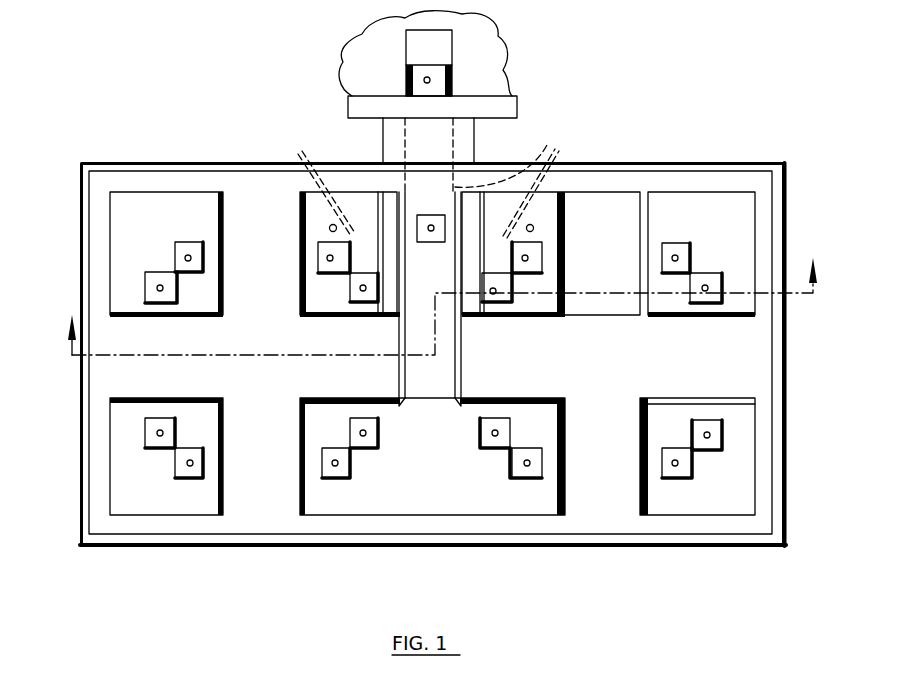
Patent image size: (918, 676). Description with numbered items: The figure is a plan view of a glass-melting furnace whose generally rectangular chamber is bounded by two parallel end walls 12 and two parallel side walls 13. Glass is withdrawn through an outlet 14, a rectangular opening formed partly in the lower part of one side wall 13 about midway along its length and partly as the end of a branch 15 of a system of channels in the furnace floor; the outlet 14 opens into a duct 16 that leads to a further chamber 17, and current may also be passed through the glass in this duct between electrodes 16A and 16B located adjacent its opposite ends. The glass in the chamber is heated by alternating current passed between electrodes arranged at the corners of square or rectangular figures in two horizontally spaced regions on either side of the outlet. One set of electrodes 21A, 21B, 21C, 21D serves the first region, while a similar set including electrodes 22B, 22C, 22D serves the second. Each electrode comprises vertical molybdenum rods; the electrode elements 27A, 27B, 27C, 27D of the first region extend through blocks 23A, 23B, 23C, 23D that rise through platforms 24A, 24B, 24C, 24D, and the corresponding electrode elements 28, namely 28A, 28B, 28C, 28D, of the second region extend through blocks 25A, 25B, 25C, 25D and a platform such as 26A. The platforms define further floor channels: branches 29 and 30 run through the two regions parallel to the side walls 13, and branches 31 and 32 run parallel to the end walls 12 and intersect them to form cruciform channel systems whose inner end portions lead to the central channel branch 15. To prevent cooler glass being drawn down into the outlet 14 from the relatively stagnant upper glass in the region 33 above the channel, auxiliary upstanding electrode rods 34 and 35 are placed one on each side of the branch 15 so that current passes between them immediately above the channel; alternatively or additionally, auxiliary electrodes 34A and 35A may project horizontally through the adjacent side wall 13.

The end walls 12 is at (93, 400).
The side walls 13 is at (235, 170).
The outlet 14 is at (501, 165).
The branch 15 is at (430, 299).
The duct 16 is at (468, 140).
The electrode 16A is at (431, 231).
The electrode 16B is at (424, 80).
The further chamber 17 is at (502, 80).
The electrode 21A is at (193, 271).
The electrode 21B is at (348, 274).
The electrode 21C is at (345, 437).
The electrode 21D is at (198, 436).
The electrode 22B is at (743, 271).
The electrode 22C is at (710, 440).
The electrode 22D is at (503, 442).
The block 23A is at (204, 272).
The block 23B is at (368, 302).
The block 23C is at (350, 418).
The block 23D is at (172, 420).
The platform 24A is at (207, 304).
The platform 24B is at (317, 308).
The platform 24C is at (306, 400).
The platform 24D is at (212, 419).
The block 25A is at (543, 272).
The block 25B is at (697, 267).
The block 25C is at (697, 420).
The block 25D is at (520, 481).
The platform 26A is at (547, 303).
The electrode element 27A is at (188, 255).
The electrode element 27B is at (327, 258).
The electrode element 27C is at (366, 436).
The electrode element 27D is at (160, 430).
The electrode elements 28 is at (722, 318).
The electrode element 28A is at (530, 257).
The electrode element 28B is at (676, 255).
The electrode element 28C is at (703, 454).
The electrode element 28D is at (496, 428).
The branch 29 is at (320, 414).
The branch 30 is at (683, 286).
The branch 31 is at (449, 274).
The branch 32 is at (551, 317).
The region 33 is at (427, 230).
The auxiliary electrode rod 34 is at (330, 227).
The auxiliary electrode 34A is at (324, 158).
The auxiliary electrode rod 35 is at (534, 228).
The auxiliary electrode 35A is at (552, 162).